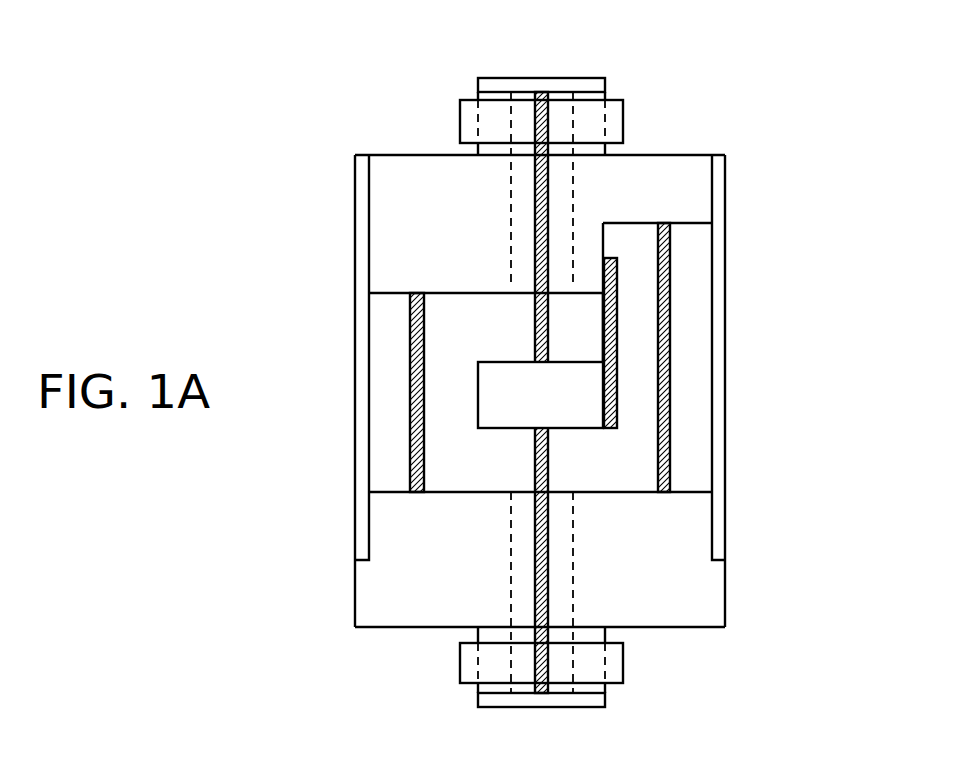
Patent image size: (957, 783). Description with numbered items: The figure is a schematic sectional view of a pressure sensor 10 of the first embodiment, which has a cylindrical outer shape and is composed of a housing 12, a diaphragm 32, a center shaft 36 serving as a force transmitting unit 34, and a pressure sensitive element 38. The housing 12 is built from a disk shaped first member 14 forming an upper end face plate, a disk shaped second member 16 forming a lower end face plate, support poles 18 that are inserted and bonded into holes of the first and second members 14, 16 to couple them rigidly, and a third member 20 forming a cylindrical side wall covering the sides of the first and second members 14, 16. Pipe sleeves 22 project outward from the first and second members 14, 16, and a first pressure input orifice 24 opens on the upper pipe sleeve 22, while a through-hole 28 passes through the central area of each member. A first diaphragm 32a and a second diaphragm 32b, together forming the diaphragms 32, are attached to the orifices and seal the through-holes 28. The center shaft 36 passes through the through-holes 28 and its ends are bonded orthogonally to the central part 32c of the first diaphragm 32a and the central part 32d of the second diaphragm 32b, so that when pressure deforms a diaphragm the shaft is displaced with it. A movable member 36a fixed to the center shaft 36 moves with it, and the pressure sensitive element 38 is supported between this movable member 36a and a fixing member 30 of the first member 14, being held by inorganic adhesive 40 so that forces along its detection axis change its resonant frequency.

The pressure sensor 10 is at (830, 122).
The housing 12 is at (677, 155).
The first member 14 is at (389, 155).
The second member 16 is at (725, 612).
The support pole 18 is at (410, 426).
The third member 20 is at (355, 357).
The pipe sleeve 22 is at (587, 391).
The first pressure input orifice 24 is at (605, 100).
The through-hole 28 is at (557, 192).
The fixing member 30 is at (603, 272).
The diaphragm 32 is at (508, 78).
The first diaphragm 32a is at (541, 85).
The second diaphragm 32b is at (541, 700).
The central part of first diaphragm 32c is at (548, 92).
The central part of second diaphragm 32d is at (540, 693).
The force transmitting unit 34 is at (472, 392).
The center shaft 36 is at (535, 312).
The movable member 36a is at (487, 362).
The pressure sensitive element 38 is at (617, 418).
The inorganic adhesive 40 is at (618, 245).